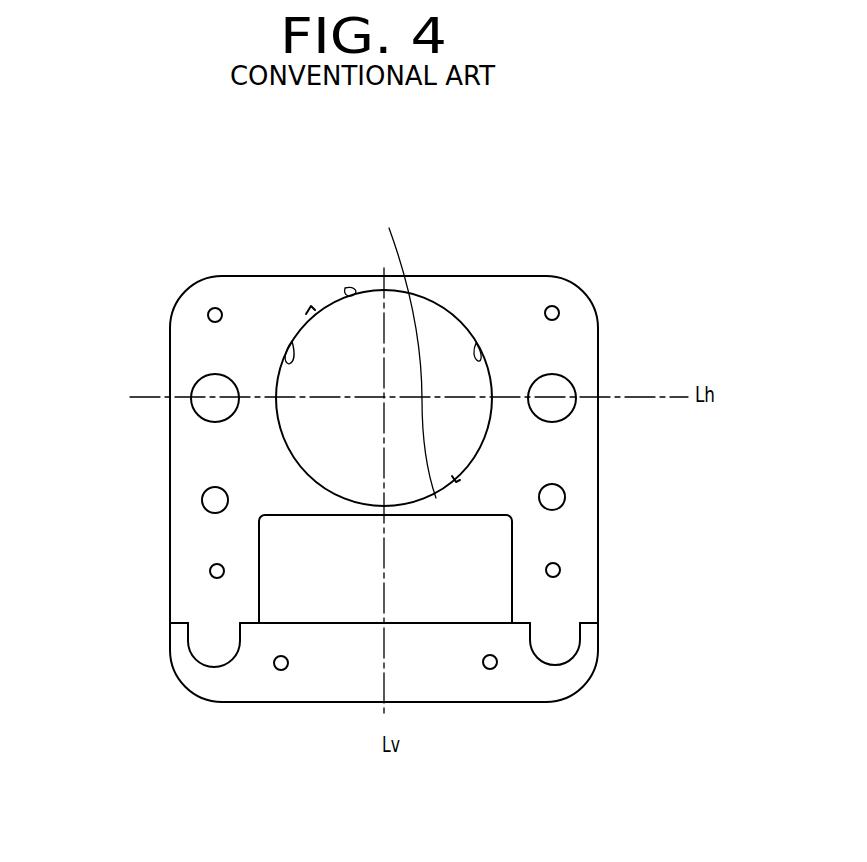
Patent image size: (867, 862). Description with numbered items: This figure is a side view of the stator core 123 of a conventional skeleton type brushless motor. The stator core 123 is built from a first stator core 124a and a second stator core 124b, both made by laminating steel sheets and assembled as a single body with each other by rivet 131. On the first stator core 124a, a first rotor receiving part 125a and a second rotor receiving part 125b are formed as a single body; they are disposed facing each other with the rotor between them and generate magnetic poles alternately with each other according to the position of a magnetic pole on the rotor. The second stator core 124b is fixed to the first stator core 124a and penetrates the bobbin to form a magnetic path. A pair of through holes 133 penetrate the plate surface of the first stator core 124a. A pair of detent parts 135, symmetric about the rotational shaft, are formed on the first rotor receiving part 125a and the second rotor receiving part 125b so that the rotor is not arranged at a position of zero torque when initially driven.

The stator core 123 is at (164, 274).
The first stator core 124a is at (587, 532).
The second stator core 124b is at (343, 683).
The first rotor receiving part 125a is at (292, 341).
The second rotor receiving part 125b is at (476, 343).
The rivet 131 is at (559, 311).
The through holes 133 is at (570, 396).
The detent parts 135 is at (349, 288).